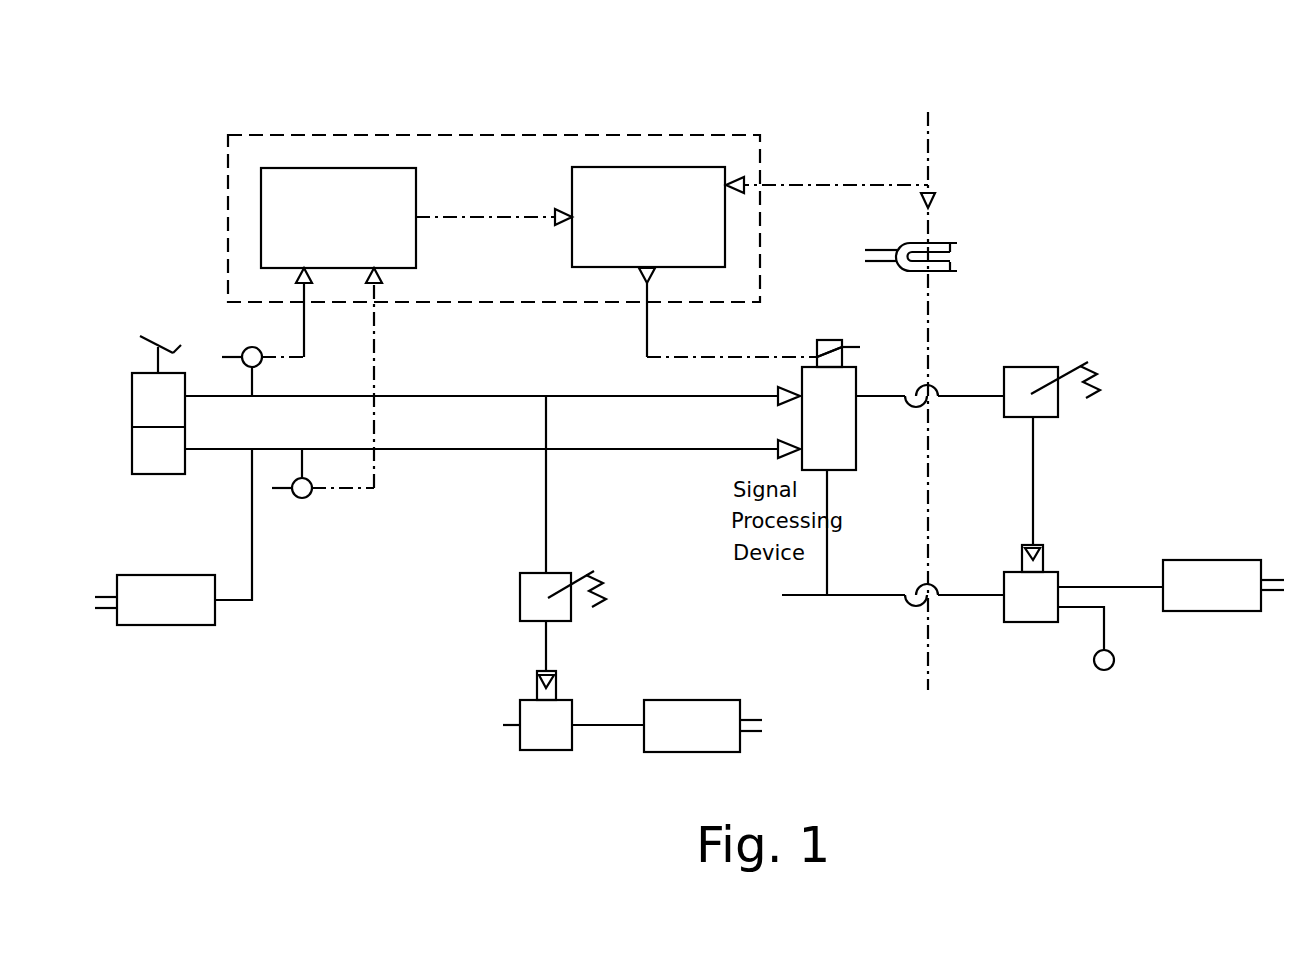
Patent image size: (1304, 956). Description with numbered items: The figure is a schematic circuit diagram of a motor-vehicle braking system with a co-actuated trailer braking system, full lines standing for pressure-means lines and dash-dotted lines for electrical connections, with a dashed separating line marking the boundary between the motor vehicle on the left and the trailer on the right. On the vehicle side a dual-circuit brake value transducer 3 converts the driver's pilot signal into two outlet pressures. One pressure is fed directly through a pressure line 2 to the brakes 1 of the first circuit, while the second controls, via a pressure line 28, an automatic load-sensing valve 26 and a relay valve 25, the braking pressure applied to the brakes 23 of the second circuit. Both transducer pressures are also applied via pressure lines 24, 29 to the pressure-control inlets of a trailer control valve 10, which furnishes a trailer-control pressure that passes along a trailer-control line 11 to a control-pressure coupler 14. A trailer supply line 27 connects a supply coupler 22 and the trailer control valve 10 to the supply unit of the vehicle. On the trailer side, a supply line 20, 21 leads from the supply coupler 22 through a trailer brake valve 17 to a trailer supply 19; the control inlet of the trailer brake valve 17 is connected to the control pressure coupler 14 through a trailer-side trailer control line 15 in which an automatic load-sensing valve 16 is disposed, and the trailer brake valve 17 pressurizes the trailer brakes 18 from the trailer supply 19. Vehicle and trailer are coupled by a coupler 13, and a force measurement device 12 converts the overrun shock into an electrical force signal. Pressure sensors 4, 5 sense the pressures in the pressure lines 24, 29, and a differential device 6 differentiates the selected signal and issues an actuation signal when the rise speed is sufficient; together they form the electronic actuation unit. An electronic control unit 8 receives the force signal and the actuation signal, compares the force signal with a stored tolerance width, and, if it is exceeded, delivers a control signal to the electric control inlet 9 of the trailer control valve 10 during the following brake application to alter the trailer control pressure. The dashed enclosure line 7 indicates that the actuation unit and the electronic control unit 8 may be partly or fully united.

The brakes 1 is at (148, 627).
The pressure line 2 is at (250, 491).
The dual-circuit brake value transducer 3 is at (130, 385).
The pressure sensor 4 is at (243, 350).
The pressure sensor 5 is at (300, 498).
The differential device 6 is at (322, 167).
The dashed enclosure line 7 is at (432, 130).
The electronic control unit 8 is at (632, 166).
The electric control inlet 9 is at (826, 340).
The trailer control valve 10 is at (848, 375).
The trailer-control line 11 is at (882, 393).
The force measurement device 12 is at (933, 190).
The coupler 13 is at (955, 236).
The control-pressure coupler 14 is at (930, 388).
The trailer-side trailer control line 15 is at (960, 394).
The trailer-side automatic load-sensing valve 16 is at (1054, 366).
The trailer brake valve 17 is at (1048, 580).
The brakes 18 is at (1200, 612).
The trailer supply 19 is at (1108, 670).
The supply line 20 is at (1098, 714).
The supply line 21 is at (960, 596).
The supply coupler 22 is at (927, 650).
The brakes 23 is at (667, 741).
The pressure line 24 is at (590, 397).
The relay valve 25 is at (547, 740).
The automatic load-sensing valve 26 is at (527, 626).
The trailer supply line 27 is at (852, 597).
The pressure line 28 is at (476, 397).
The pressure line 29 is at (418, 450).